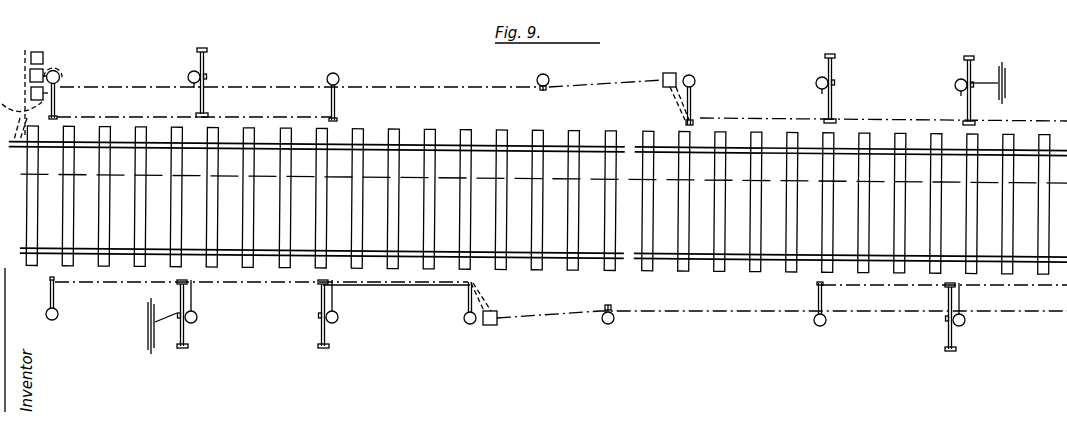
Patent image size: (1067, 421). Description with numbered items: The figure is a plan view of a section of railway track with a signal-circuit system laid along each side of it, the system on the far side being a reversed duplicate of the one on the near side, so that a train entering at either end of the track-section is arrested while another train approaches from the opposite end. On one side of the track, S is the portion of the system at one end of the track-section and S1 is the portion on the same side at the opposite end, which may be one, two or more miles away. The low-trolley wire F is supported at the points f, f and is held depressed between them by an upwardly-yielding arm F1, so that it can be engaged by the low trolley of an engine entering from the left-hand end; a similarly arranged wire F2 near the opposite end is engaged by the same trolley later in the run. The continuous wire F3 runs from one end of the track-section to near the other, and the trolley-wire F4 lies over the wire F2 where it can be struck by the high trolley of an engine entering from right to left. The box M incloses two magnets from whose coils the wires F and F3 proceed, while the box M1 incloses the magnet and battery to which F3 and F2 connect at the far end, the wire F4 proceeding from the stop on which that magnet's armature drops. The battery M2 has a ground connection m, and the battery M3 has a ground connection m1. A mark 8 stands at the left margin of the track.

The railway track section 8 is at (18, 166).
The low-trolley wire F is at (562, 203).
The upwardly-yielding arm F1 is at (828, 119).
The low-trolley wire F2 is at (926, 113).
The continuous wire F3 is at (1006, 320).
The trolley-wire F4 is at (756, 117).
The circuit system portion S is at (583, 195).
The circuit system portion S1 is at (576, 205).
The inclosing box M is at (529, 218).
The inclosing box M1 is at (576, 200).
The battery M2 is at (25, 93).
The battery M3 is at (21, 91).
The wire support f is at (57, 103).
The ground connection m is at (21, 121).
The ground connection m1 is at (34, 123).